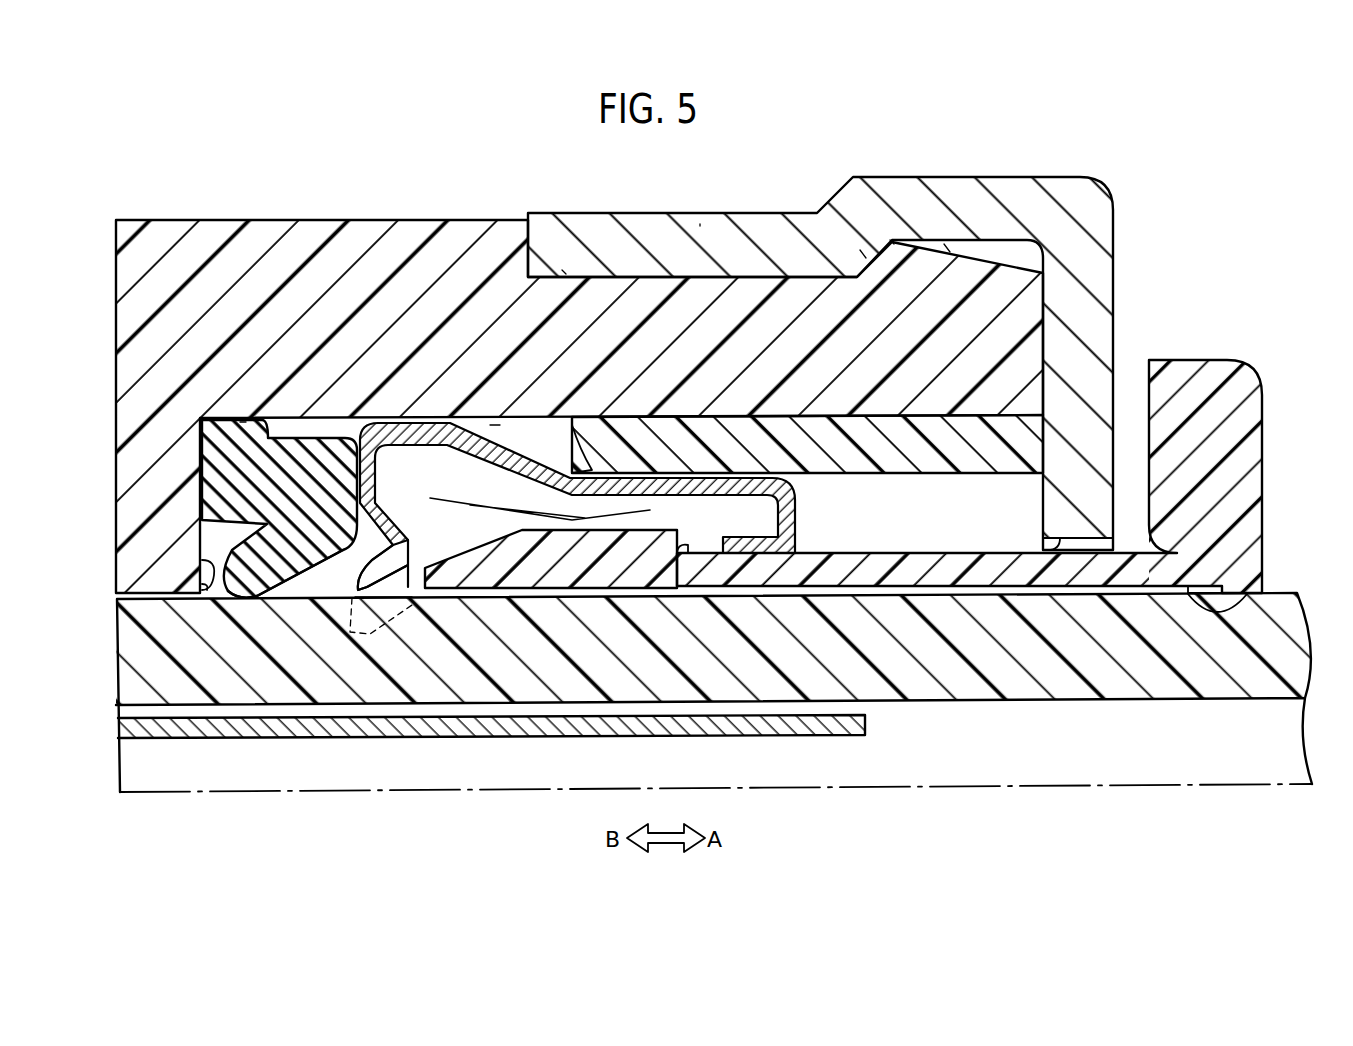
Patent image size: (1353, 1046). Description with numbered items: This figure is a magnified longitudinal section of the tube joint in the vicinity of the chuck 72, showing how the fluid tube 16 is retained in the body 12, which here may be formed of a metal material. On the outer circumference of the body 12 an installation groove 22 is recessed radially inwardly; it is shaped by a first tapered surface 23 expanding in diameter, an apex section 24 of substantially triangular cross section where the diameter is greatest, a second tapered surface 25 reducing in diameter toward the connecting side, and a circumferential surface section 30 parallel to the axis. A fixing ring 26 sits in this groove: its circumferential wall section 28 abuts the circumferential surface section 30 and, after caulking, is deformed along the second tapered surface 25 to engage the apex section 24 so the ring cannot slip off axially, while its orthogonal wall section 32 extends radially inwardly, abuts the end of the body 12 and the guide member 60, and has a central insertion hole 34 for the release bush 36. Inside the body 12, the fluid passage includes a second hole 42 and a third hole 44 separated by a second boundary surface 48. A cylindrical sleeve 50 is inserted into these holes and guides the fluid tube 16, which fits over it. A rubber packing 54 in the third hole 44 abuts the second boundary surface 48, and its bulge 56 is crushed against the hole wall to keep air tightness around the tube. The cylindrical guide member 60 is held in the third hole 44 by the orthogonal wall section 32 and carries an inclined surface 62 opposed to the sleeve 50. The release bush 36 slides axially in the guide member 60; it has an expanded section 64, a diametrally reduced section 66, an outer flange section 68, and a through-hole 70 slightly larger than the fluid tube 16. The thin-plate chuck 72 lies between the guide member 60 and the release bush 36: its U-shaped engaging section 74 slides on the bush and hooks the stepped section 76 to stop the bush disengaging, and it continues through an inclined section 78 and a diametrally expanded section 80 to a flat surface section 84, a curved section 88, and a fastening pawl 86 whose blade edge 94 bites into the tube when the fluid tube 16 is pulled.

The body 12 is at (291, 220).
The fluid tube 16 is at (1262, 625).
The installation groove 22 is at (755, 275).
The first tapered surface 23 is at (947, 247).
The apex section 24 is at (892, 242).
The second tapered surface 25 is at (867, 257).
The fixing ring 26 is at (1113, 213).
The circumferential wall section 28 is at (694, 228).
The circumferential surface section 30 is at (567, 277).
The orthogonal wall section 32 is at (1100, 325).
The insertion hole 34 is at (1045, 548).
The release bush 36 is at (1262, 401).
The second hole 42 is at (232, 707).
The third hole 44 is at (497, 425).
The second boundary surface 48 is at (200, 588).
The sleeve 50 is at (831, 733).
The packing 54 is at (282, 578).
The bulge 56 is at (243, 424).
The guide member 60 is at (907, 458).
The inclined surface 62 is at (572, 460).
The expanded section 64 is at (598, 560).
The diametrally reduced section 66 is at (472, 560).
The flange section 68 is at (1255, 477).
The through-hole 70 is at (1258, 575).
The chuck 72 is at (383, 591).
The engaging section 74 is at (790, 508).
The stepped section 76 is at (686, 548).
The inclined section 78 is at (506, 468).
The diametrally expanded section 80 is at (435, 432).
The flat surface section 84 is at (376, 484).
The fastening pawl 86 is at (210, 567).
The curved section 88 is at (412, 547).
The blade edge 94 is at (353, 599).